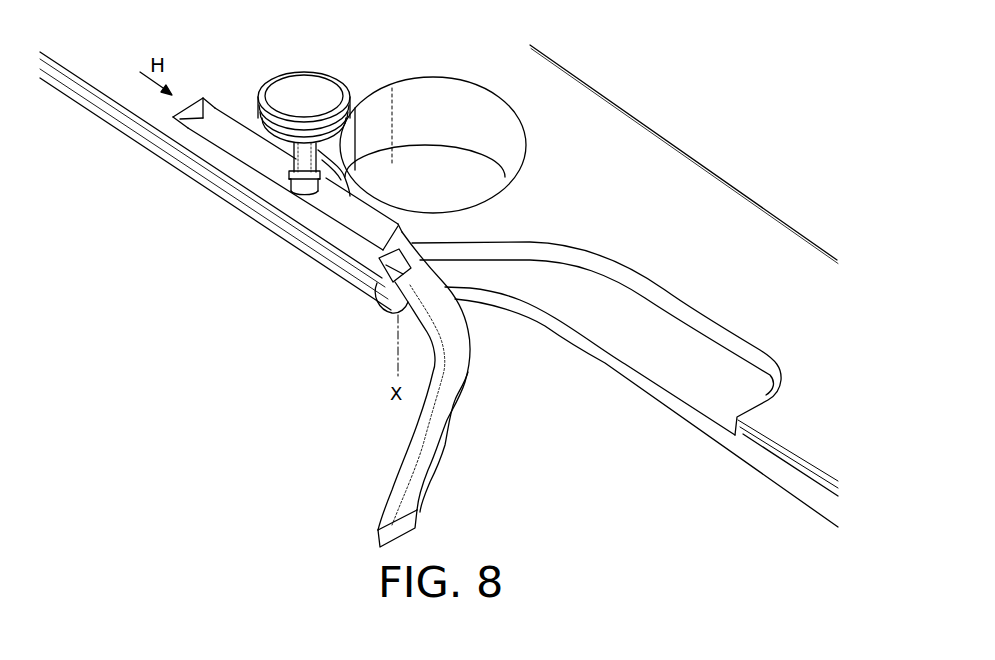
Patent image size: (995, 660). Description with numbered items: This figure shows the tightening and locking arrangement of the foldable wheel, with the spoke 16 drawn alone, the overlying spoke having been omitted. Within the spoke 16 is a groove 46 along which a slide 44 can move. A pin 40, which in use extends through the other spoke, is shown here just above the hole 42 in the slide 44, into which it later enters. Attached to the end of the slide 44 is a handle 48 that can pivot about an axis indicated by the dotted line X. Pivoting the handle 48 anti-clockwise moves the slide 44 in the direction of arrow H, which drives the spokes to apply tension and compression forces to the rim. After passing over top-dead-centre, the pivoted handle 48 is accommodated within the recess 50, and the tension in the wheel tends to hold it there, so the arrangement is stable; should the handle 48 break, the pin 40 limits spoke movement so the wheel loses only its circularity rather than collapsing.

The spoke 16 is at (668, 153).
The pin 40 is at (303, 78).
The hole 42 is at (288, 193).
The slide 44 is at (328, 245).
The groove 46 is at (173, 120).
The handle 48 is at (413, 443).
The recess 50 is at (634, 347).